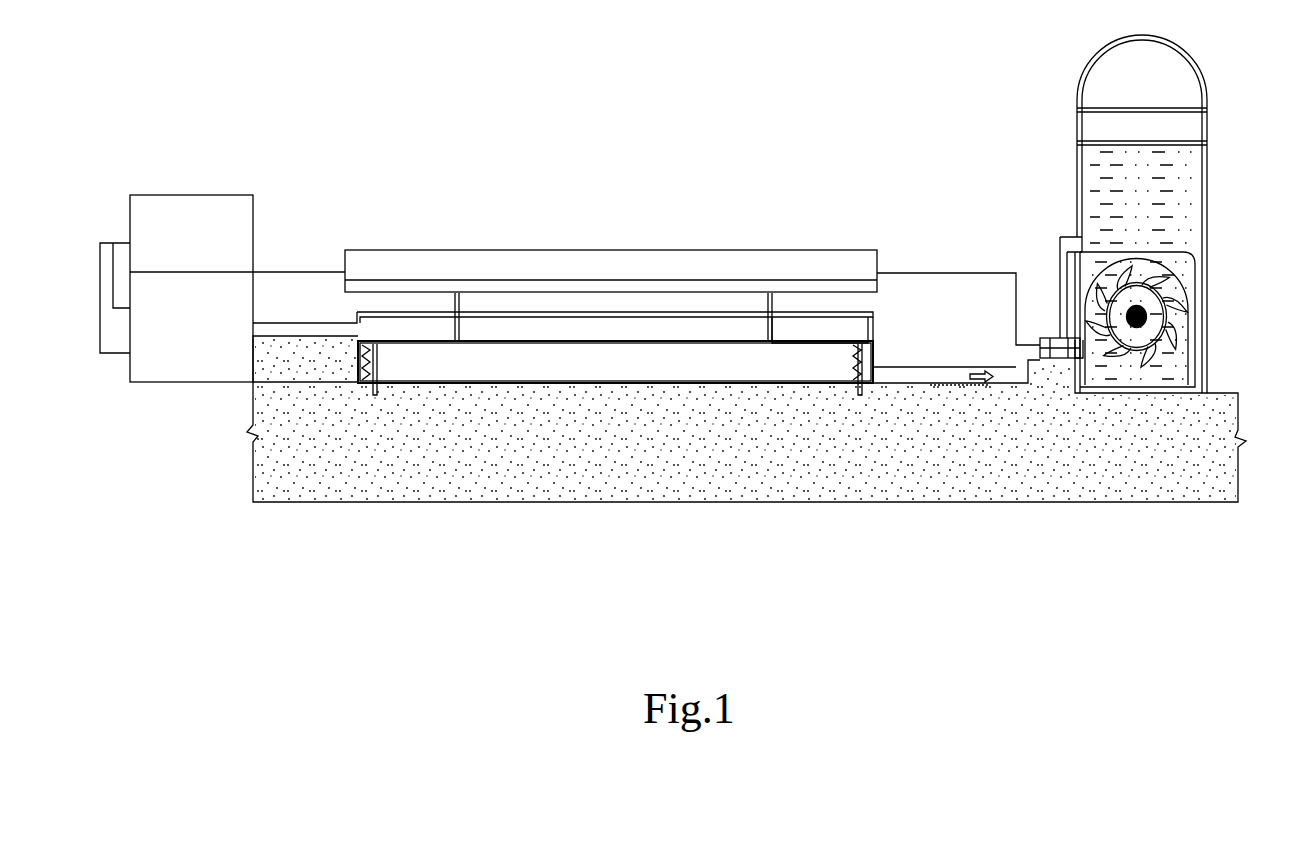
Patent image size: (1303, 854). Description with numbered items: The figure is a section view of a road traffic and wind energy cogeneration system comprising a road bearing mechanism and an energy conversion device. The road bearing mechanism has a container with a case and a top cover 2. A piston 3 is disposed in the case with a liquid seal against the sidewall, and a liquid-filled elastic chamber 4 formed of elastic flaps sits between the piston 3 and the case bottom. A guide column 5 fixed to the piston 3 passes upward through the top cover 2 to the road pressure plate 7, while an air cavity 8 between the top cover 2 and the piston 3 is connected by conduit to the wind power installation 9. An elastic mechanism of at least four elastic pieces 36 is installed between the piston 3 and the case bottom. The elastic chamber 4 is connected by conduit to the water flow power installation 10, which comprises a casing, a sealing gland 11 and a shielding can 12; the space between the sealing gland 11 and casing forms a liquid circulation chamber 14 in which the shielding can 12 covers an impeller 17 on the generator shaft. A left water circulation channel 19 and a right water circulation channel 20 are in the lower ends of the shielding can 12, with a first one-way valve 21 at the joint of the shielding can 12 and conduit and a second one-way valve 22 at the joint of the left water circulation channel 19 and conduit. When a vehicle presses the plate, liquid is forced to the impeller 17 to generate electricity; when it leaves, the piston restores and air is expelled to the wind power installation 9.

The wind power installation 9 is at (95, 298).
The elastic piece 36 is at (360, 340).
The road pressure plate 7 is at (398, 262).
The guide column 5 is at (457, 280).
The piston 3 is at (515, 338).
The top cover 2 is at (577, 308).
The elastic chamber 4 is at (643, 355).
The air cavity 8 is at (817, 328).
The second one-way valve 22 is at (1060, 330).
The left water circulation channel 19 is at (1065, 293).
The sealing gland 11 is at (1167, 143).
The liquid circulation chamber 14 is at (1187, 185).
The water flow power installation 10 is at (1222, 252).
The right water circulation channel 20 is at (1202, 263).
The shielding can 12 is at (1188, 273).
The impeller 17 is at (1168, 323).
The first one-way valve 21 is at (1083, 355).